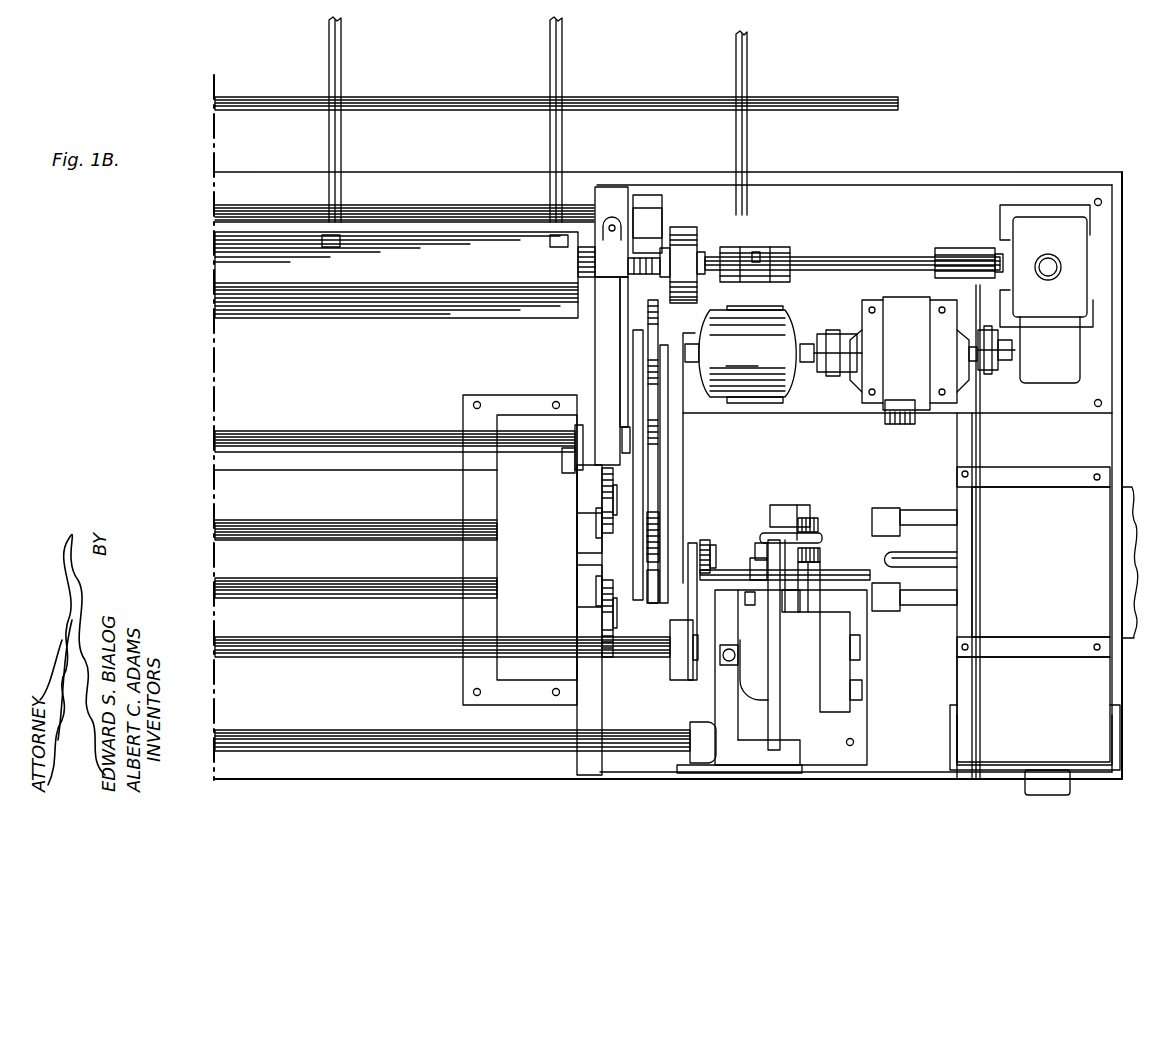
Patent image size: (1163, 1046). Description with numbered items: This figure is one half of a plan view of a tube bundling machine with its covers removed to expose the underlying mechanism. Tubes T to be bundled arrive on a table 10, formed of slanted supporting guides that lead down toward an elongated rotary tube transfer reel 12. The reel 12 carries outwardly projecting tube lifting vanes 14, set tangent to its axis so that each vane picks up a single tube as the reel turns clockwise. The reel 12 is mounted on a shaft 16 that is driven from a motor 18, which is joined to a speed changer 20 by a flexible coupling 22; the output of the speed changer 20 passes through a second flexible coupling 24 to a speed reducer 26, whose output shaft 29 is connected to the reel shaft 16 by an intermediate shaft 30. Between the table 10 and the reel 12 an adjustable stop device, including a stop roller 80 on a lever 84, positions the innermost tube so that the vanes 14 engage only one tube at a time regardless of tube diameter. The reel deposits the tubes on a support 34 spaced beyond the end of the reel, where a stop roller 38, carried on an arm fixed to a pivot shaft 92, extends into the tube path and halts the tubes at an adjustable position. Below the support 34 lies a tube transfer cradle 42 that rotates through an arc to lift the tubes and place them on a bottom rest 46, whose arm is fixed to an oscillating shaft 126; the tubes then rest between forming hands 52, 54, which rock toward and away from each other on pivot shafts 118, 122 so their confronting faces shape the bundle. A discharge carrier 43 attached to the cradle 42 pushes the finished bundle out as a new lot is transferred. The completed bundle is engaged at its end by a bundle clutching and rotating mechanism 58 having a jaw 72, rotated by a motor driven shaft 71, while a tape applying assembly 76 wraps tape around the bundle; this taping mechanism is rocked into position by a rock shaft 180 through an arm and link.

The tubes T is at (458, 102).
The table 10 is at (341, 44).
The rotary tube transfer reel 12 is at (278, 268).
The tube lifting vanes 14 is at (362, 288).
The shaft 16 is at (640, 266).
The motor 18 is at (772, 326).
The speed changer 20 is at (906, 318).
The flexible coupling 22 is at (836, 338).
The flexible coupling 24 is at (992, 368).
The speed reducer 26 is at (1057, 304).
The output shaft 29 is at (1000, 255).
The intermediate shaft 30 is at (822, 258).
The support 34 is at (604, 354).
The stop roller 38 is at (566, 470).
The tube transfer cradle 42 is at (645, 466).
The discharge carrier 43 is at (660, 524).
The bottom rest 46 is at (706, 540).
The forming hand 52 is at (600, 526).
The forming hand 54 is at (604, 596).
The bundle clutching and rotating mechanism 58 is at (1056, 560).
The motor driven shaft 71 is at (938, 550).
The jaw 72 is at (880, 530).
The tape applying assembly 76 is at (801, 485).
The stop roller 80 is at (648, 256).
The lever 84 is at (648, 240).
The pivot shaft 92 is at (326, 432).
The pivot shaft 118 is at (301, 536).
The pivot shaft 122 is at (293, 594).
The oscillating shaft 126 is at (293, 650).
The rock shaft 180 is at (278, 736).